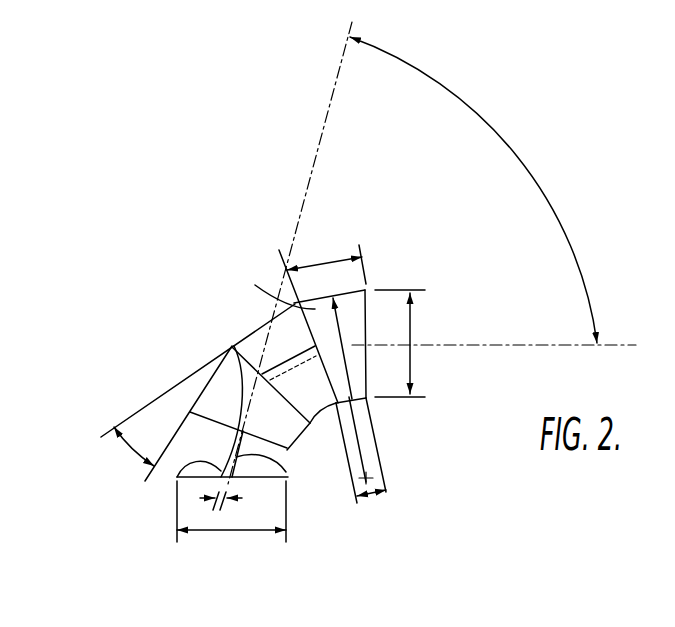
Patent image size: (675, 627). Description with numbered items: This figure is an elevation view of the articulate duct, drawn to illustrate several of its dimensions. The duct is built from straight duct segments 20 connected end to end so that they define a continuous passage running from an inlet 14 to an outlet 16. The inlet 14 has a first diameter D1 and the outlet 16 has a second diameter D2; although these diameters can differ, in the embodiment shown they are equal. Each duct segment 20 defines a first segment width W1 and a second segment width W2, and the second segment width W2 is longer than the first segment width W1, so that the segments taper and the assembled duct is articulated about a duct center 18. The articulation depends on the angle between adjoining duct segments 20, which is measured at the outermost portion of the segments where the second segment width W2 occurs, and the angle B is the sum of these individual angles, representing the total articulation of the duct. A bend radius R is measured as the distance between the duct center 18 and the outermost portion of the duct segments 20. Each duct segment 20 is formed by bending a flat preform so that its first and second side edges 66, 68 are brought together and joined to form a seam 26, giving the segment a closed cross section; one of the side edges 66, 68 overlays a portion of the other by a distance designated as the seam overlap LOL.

The inlet 14 is at (368, 324).
The outlet 16 is at (252, 478).
The duct center 18 is at (382, 476).
The duct segment 20 is at (266, 328).
The seam 26 is at (234, 346).
The first side edge 66 is at (177, 477).
The second side edge 68 is at (286, 472).
The angle B is at (515, 150).
The first diameter D1 is at (411, 345).
The second diameter D2 is at (220, 533).
The first segment width W1 is at (368, 497).
The second segment width W2 is at (331, 260).
The bend radius R is at (358, 439).
The seam overlap LOL is at (222, 506).